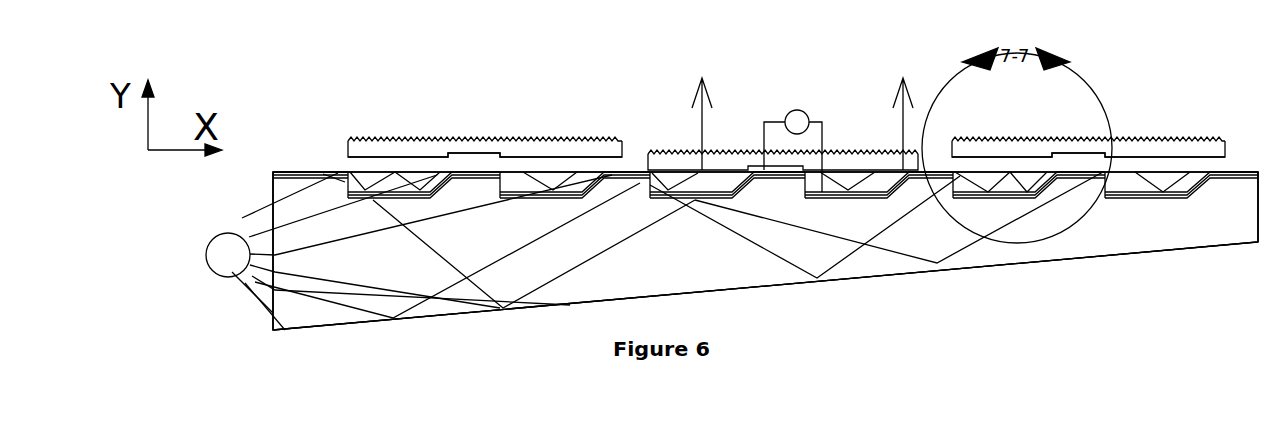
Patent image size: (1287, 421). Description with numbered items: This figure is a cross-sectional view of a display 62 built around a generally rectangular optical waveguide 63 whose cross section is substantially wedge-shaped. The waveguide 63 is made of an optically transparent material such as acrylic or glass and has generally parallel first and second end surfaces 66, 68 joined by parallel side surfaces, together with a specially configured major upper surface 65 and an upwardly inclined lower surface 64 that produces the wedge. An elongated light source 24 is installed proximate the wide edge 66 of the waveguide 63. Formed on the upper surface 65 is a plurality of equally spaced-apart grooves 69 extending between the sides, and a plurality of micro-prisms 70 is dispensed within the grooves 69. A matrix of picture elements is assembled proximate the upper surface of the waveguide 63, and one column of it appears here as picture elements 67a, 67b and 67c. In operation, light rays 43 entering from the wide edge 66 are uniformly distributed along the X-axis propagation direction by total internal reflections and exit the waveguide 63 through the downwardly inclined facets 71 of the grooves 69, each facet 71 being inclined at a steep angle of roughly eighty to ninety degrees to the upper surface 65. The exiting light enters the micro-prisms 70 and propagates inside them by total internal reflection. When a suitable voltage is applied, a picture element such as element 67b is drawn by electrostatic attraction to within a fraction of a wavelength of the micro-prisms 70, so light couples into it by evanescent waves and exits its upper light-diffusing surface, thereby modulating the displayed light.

The light source 24 is at (232, 256).
The light rays 43 is at (357, 307).
The display 62 is at (334, 104).
The optical waveguide 63 is at (702, 270).
The lower surface 64 is at (1087, 260).
The upper surface 65 is at (280, 172).
The first end surface 66 is at (262, 310).
The picture element 67a is at (473, 146).
The picture element 67b is at (750, 158).
The picture element 67c is at (1085, 145).
The second end surface 68 is at (1258, 212).
The grooves 69 is at (367, 163).
The micro-prisms 70 is at (392, 177).
The optically flat facet 71 is at (338, 178).